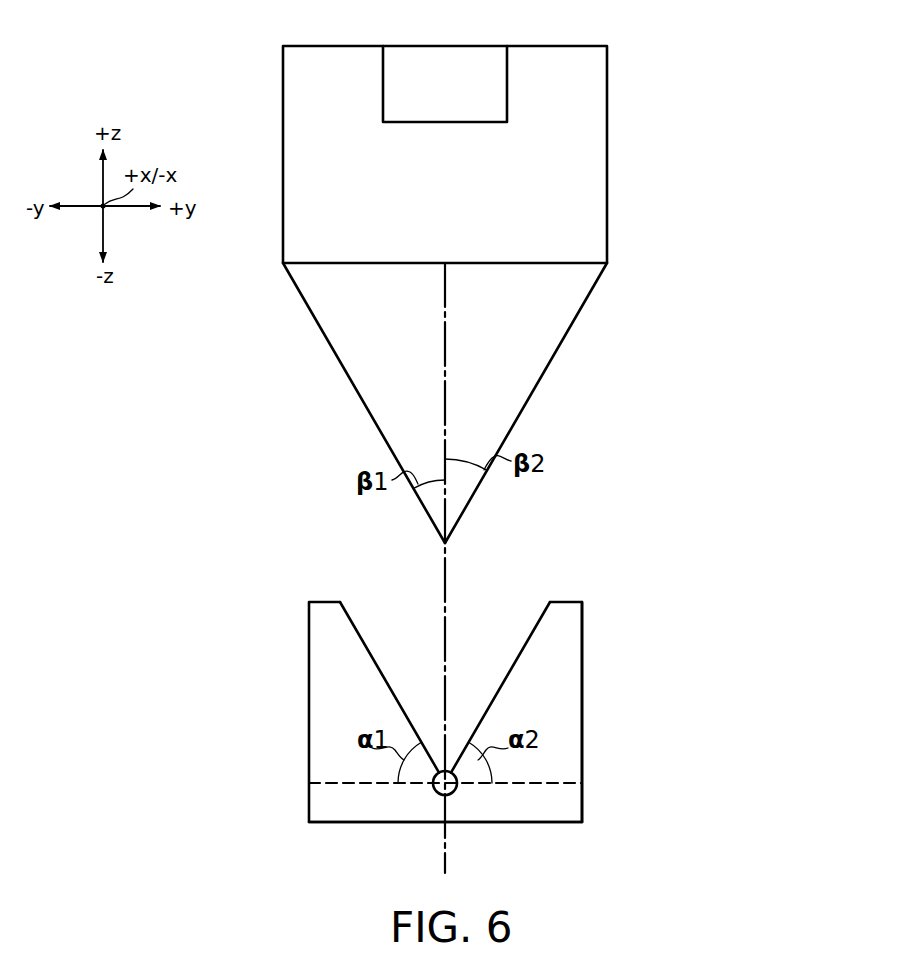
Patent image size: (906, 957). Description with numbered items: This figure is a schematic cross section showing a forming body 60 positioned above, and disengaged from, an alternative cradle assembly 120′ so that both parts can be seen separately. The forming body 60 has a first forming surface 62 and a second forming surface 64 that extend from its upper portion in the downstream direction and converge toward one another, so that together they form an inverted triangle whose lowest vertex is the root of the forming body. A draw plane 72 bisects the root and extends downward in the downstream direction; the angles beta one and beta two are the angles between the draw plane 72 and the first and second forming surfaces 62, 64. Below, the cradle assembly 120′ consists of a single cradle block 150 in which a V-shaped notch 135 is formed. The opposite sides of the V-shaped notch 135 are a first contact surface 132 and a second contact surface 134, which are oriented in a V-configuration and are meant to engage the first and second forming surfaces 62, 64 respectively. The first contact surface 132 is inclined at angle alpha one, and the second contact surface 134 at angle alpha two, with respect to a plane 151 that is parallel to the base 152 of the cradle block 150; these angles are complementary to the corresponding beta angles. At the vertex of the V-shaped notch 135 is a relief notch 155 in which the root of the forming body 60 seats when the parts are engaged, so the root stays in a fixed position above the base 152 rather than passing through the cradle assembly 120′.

The forming body 60 is at (676, 70).
The first forming surface 62 is at (299, 292).
The second forming surface 64 is at (591, 292).
The draw plane 72 is at (447, 860).
The cradle assembly 120′ is at (600, 680).
The first contact surface 132 is at (369, 652).
The second contact surface 134 is at (521, 650).
The V-shaped notch 135 is at (487, 585).
The cradle block 150 is at (582, 757).
The plane 151 is at (360, 783).
The base 152 is at (553, 822).
The relief notch 155 is at (435, 793).